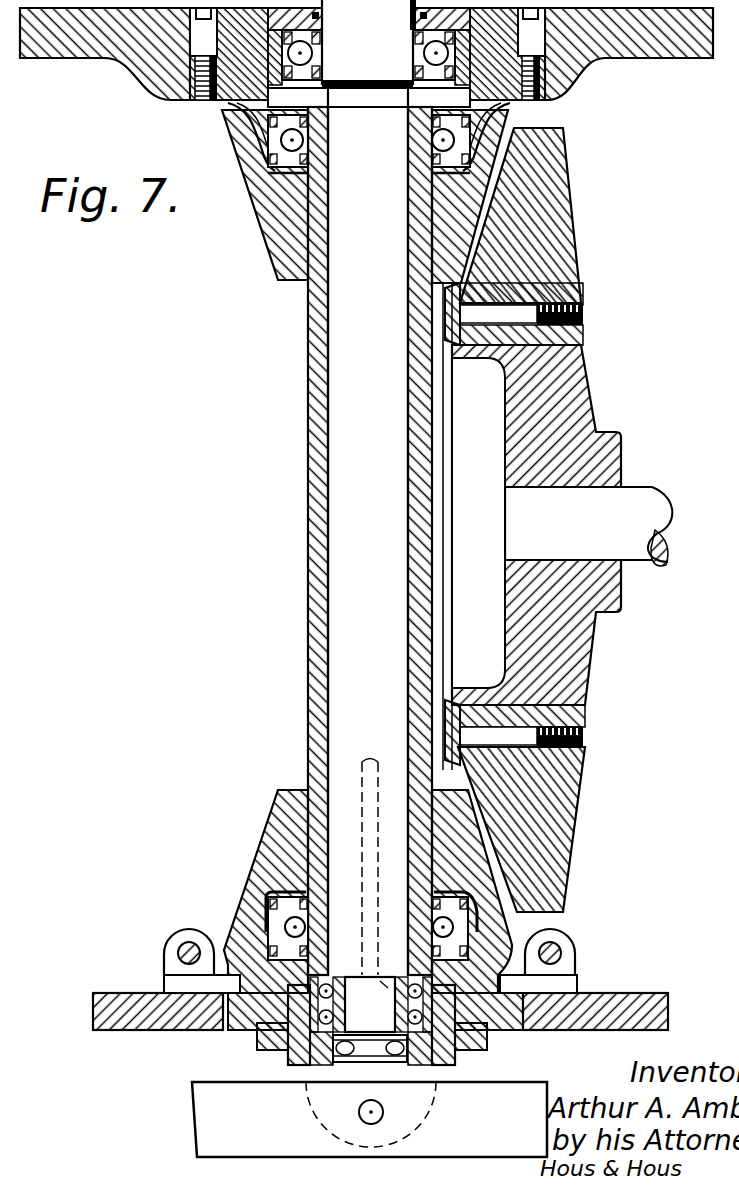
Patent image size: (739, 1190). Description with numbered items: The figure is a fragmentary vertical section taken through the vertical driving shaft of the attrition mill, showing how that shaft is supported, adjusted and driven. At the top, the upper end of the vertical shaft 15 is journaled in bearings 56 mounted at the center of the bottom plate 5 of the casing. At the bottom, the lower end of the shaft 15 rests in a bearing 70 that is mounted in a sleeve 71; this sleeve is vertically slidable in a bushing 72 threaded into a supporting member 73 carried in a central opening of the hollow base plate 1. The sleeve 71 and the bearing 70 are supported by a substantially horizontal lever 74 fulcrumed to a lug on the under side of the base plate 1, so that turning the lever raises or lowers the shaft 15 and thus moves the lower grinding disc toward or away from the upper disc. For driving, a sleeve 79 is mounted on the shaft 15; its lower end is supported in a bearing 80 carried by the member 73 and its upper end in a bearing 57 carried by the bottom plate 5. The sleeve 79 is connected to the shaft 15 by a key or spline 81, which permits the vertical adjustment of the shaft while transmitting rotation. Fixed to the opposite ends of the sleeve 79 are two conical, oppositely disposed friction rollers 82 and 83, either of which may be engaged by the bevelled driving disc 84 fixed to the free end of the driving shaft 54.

The hollow base plate 1 is at (143, 1022).
The bottom plate 5 is at (108, 42).
The vertical shaft 15 is at (375, 361).
The driving shaft 54 is at (637, 487).
The bearings 56 is at (436, 53).
The bearing 57 is at (443, 143).
The bearing 70 is at (410, 1008).
The sleeve 71 is at (292, 1059).
The bushing 72 is at (262, 1042).
The supporting member 73 is at (229, 1031).
The horizontal lever 74 is at (211, 1105).
The sleeve 79 is at (318, 438).
The bearing 80 is at (443, 927).
The key or spline 81 is at (376, 796).
The conical friction roller 82 is at (276, 231).
The conical friction roller 83 is at (286, 813).
The bevelled driving disc 84 is at (571, 261).